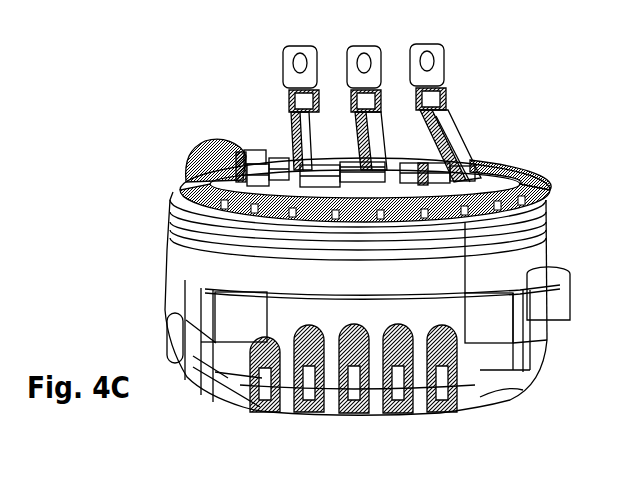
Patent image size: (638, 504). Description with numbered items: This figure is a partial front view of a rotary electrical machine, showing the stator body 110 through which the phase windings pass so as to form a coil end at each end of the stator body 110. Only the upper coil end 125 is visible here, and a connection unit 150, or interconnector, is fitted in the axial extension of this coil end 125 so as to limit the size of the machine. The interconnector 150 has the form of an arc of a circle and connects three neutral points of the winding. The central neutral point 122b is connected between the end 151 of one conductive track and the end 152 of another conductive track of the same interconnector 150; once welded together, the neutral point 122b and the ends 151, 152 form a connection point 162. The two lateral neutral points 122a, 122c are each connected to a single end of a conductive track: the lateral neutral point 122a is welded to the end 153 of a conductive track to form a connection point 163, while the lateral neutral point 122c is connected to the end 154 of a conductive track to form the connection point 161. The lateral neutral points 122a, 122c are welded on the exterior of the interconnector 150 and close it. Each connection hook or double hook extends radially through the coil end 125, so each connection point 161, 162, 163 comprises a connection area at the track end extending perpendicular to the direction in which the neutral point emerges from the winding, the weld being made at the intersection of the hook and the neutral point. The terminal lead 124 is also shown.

The stator body 110 is at (522, 260).
The lateral neutral point 122a is at (245, 150).
The central neutral point 122b is at (323, 168).
The lateral neutral point 122c is at (422, 156).
The terminal lead 124 is at (425, 168).
The upper coil end 125 is at (545, 184).
The connection unit 150 is at (262, 160).
The end of a conductive track 151 is at (322, 168).
The end of another conductive track 152 is at (325, 138).
The end of a conductive track 153 is at (197, 147).
The end of a conductive track 154 is at (420, 168).
The connection point 161 is at (437, 155).
The connection point 162 is at (312, 162).
The connection point 163 is at (250, 140).